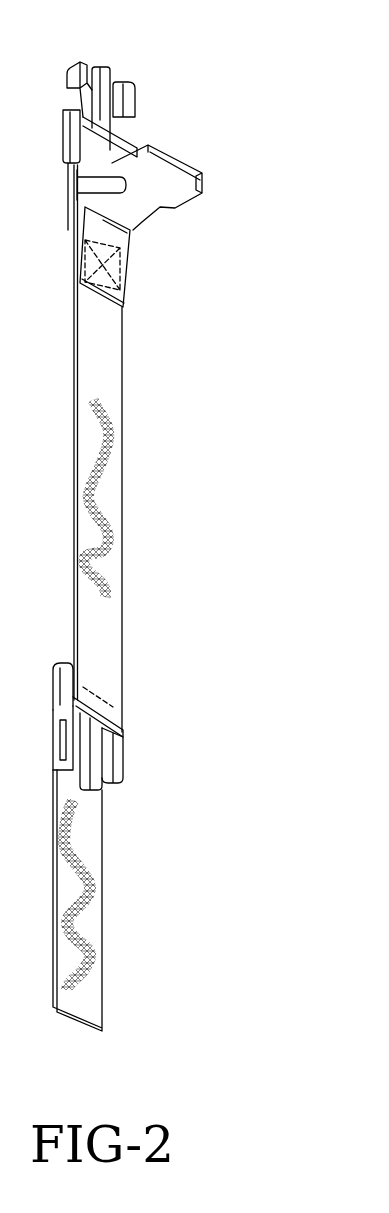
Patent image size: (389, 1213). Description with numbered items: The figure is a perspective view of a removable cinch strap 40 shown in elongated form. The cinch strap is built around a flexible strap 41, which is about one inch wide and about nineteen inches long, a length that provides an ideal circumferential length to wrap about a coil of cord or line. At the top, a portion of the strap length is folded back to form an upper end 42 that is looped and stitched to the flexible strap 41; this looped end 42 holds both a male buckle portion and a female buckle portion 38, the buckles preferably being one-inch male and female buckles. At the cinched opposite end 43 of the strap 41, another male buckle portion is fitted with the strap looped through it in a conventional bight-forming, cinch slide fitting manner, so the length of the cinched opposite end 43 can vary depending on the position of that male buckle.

The female buckle portion 38 is at (166, 212).
The cinch strap 40 is at (150, 437).
The flexible strap 41 is at (113, 567).
The upper end 42 is at (100, 278).
The cinched opposite end 43 is at (105, 703).